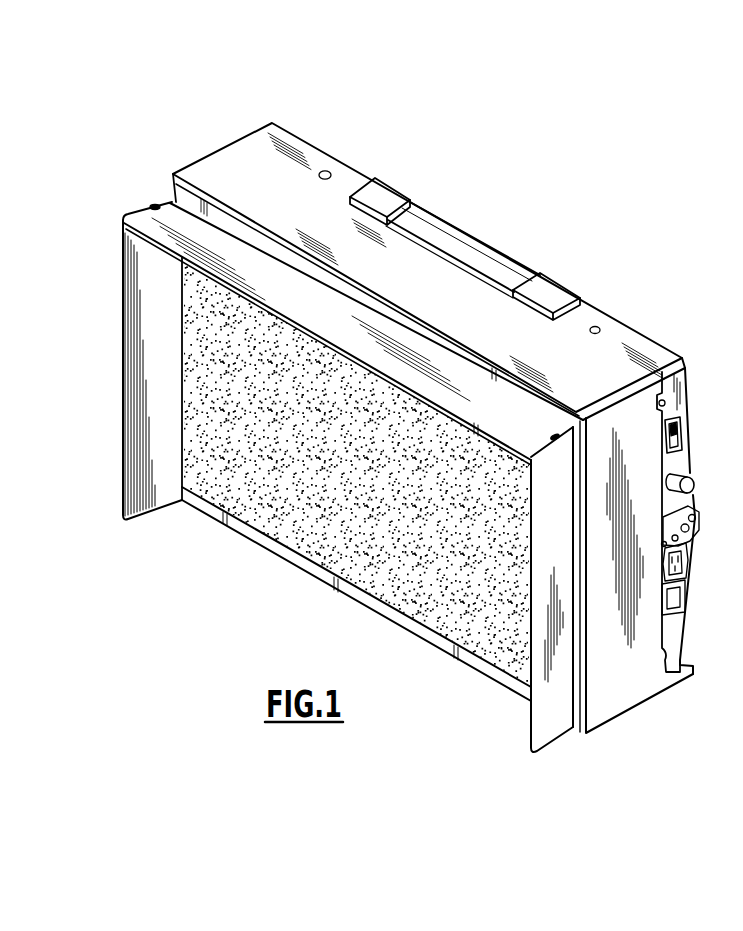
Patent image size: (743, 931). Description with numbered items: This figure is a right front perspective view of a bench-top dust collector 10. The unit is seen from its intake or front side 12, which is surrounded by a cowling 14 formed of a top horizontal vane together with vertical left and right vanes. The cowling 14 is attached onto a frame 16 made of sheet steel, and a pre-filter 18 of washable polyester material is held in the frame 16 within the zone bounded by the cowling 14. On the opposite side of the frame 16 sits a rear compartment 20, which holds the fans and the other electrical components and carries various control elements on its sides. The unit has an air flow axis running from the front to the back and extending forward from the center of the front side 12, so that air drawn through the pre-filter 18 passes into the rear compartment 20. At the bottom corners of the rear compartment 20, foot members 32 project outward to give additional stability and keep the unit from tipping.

The bench-top dust collector 10 is at (282, 82).
The front side 12 is at (250, 584).
The cowling 14 is at (560, 748).
The frame 16 is at (215, 162).
The pre-filter 18 is at (287, 472).
The rear compartment 20 is at (625, 338).
The foot members 32 is at (682, 670).